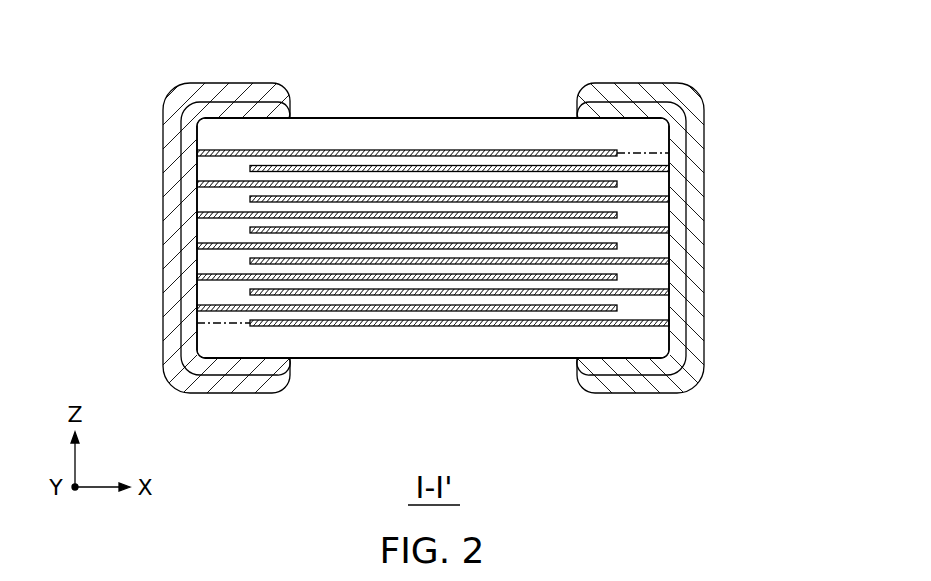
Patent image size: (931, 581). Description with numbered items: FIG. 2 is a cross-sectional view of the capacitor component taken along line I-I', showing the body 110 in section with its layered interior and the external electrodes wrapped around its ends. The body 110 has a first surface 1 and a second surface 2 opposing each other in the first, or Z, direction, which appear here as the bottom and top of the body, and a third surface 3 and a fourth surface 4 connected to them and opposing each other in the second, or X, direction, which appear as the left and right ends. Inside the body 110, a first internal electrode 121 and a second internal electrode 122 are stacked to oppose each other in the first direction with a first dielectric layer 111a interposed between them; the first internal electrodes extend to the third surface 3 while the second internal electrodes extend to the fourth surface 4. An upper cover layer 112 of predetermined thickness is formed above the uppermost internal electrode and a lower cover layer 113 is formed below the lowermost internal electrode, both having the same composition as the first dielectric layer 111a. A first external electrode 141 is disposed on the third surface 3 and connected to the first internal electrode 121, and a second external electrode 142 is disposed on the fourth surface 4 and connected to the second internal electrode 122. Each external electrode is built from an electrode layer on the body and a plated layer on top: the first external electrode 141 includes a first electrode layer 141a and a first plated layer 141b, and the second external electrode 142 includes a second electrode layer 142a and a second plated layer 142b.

The first surface 1 is at (477, 358).
The second surface 2 is at (508, 118).
The third surface 3 is at (197, 292).
The fourth surface 4 is at (669, 277).
The body 110 is at (375, 118).
The first dielectric layer 111a is at (320, 175).
The upper cover layer 112 is at (440, 128).
The lower cover layer 113 is at (424, 347).
The first internal electrode 121 is at (483, 151).
The second internal electrode 122 is at (543, 166).
The first external electrode 141 is at (155, 238).
The first electrode layer 141a is at (185, 177).
The first plated layer 141b is at (178, 212).
The second external electrode 142 is at (713, 238).
The second electrode layer 142a is at (680, 177).
The second plated layer 142b is at (690, 212).